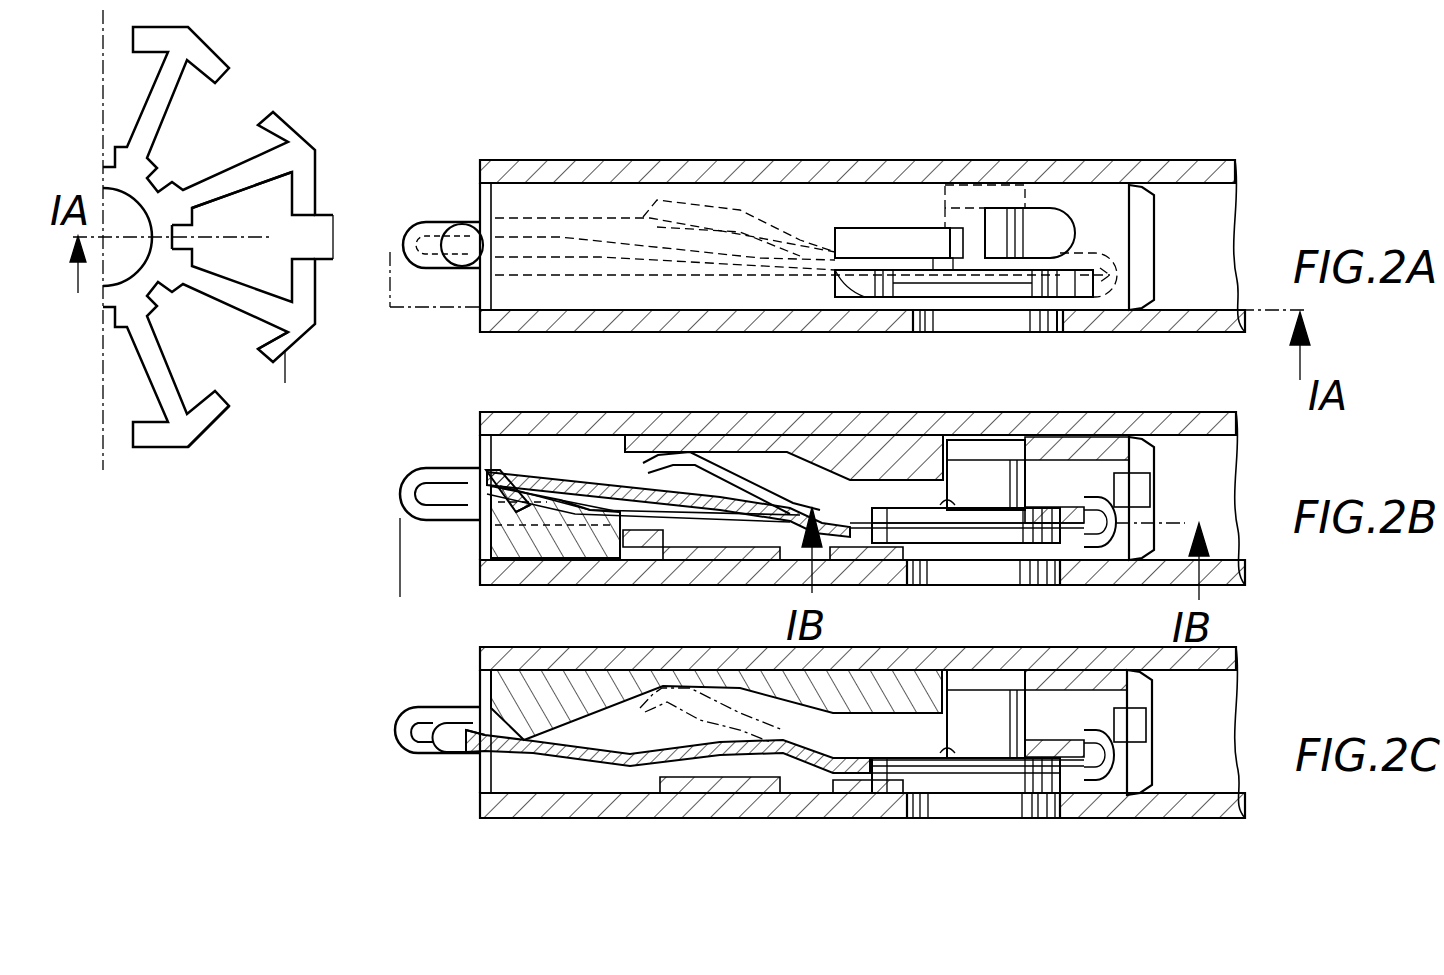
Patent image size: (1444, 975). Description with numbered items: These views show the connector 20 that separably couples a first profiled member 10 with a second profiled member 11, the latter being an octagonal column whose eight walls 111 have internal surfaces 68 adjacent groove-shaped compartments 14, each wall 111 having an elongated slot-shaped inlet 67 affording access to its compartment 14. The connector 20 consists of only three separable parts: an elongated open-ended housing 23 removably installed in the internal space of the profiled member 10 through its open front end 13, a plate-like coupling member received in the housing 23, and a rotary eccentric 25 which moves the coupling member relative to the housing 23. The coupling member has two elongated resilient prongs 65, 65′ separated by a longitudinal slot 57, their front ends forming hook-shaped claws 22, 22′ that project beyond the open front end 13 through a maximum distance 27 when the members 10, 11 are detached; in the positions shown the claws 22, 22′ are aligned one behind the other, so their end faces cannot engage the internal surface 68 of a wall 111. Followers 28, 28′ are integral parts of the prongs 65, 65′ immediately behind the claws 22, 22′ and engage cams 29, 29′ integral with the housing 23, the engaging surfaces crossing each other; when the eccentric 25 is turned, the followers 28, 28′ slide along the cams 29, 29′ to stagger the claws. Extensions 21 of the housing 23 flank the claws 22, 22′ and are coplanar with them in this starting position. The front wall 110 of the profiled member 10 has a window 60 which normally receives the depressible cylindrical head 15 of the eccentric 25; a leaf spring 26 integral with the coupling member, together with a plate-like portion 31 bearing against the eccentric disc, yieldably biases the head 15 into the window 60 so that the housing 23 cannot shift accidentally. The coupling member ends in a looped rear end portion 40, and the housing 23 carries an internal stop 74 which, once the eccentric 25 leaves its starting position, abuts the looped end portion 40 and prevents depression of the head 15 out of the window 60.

In FIG. 2A, the first profiled member 10 is at (755, 138).
In FIG. 2A, the second profiled member 11 is at (272, 70).
In FIG. 2B, the open front end 13 is at (480, 420).
In FIG. 2A, the compartment 14 is at (255, 210).
In FIG. 2A, the front portion of the eccentric 15 is at (1000, 318).
In FIG. 2B, the front portion of the eccentric 15 is at (974, 560).
In FIG. 2A, the connector 20 is at (1162, 231).
In FIG. 2B, the connector 20 is at (1165, 488).
In FIG. 2C, the connector 20 is at (1165, 722).
In FIG. 2A, the extensions 21 is at (468, 258).
In FIG. 2B, the extensions 21 is at (462, 500).
In FIG. 2C, the extensions 21 is at (445, 748).
In FIG. 2B, the claw 22 is at (402, 510).
In FIG. 2C, the claw 22′ is at (398, 735).
In FIG. 2A, the housing 23 is at (1092, 210).
In FIG. 2B, the housing 23 is at (558, 533).
In FIG. 2C, the housing 23 is at (510, 690).
In FIG. 2B, the rotary eccentric 25 is at (1015, 585).
In FIG. 2C, the rotary eccentric 25 is at (1005, 820).
In FIG. 2B, the leaf spring 26 is at (718, 478).
In FIG. 2C, the leaf spring 26 is at (708, 690).
In FIG. 2A, the maximum distance 27 is at (480, 206).
In FIG. 2B, the maximum distance 27 is at (478, 597).
In FIG. 2B, the follower 28 is at (477, 470).
In FIG. 2C, the follower 28′ is at (470, 752).
In FIG. 2B, the cam 29 is at (512, 523).
In FIG. 2B, the cam 29′ is at (592, 640).
In FIG. 2B, the plate-like portion 31 is at (812, 503).
In FIG. 2B, the looped rear end portion 40 is at (1100, 510).
In FIG. 2C, the looped rear end portion 40 is at (1098, 745).
In FIG. 2B, the slot 57 is at (723, 517).
In FIG. 2A, the window 60 is at (1073, 334).
In FIG. 2B, the prong 65 is at (593, 476).
In FIG. 2B, the prong 65′ is at (665, 547).
In FIG. 2C, the prong 65′ is at (630, 762).
In FIG. 2A, the inlet 67 is at (320, 215).
In FIG. 2A, the internal surface 68 is at (262, 340).
In FIG. 2C, the stop 74 is at (1125, 745).
In FIG. 2A, the front wall 110 is at (1187, 322).
In FIG. 2A, the wall 111 is at (232, 405).